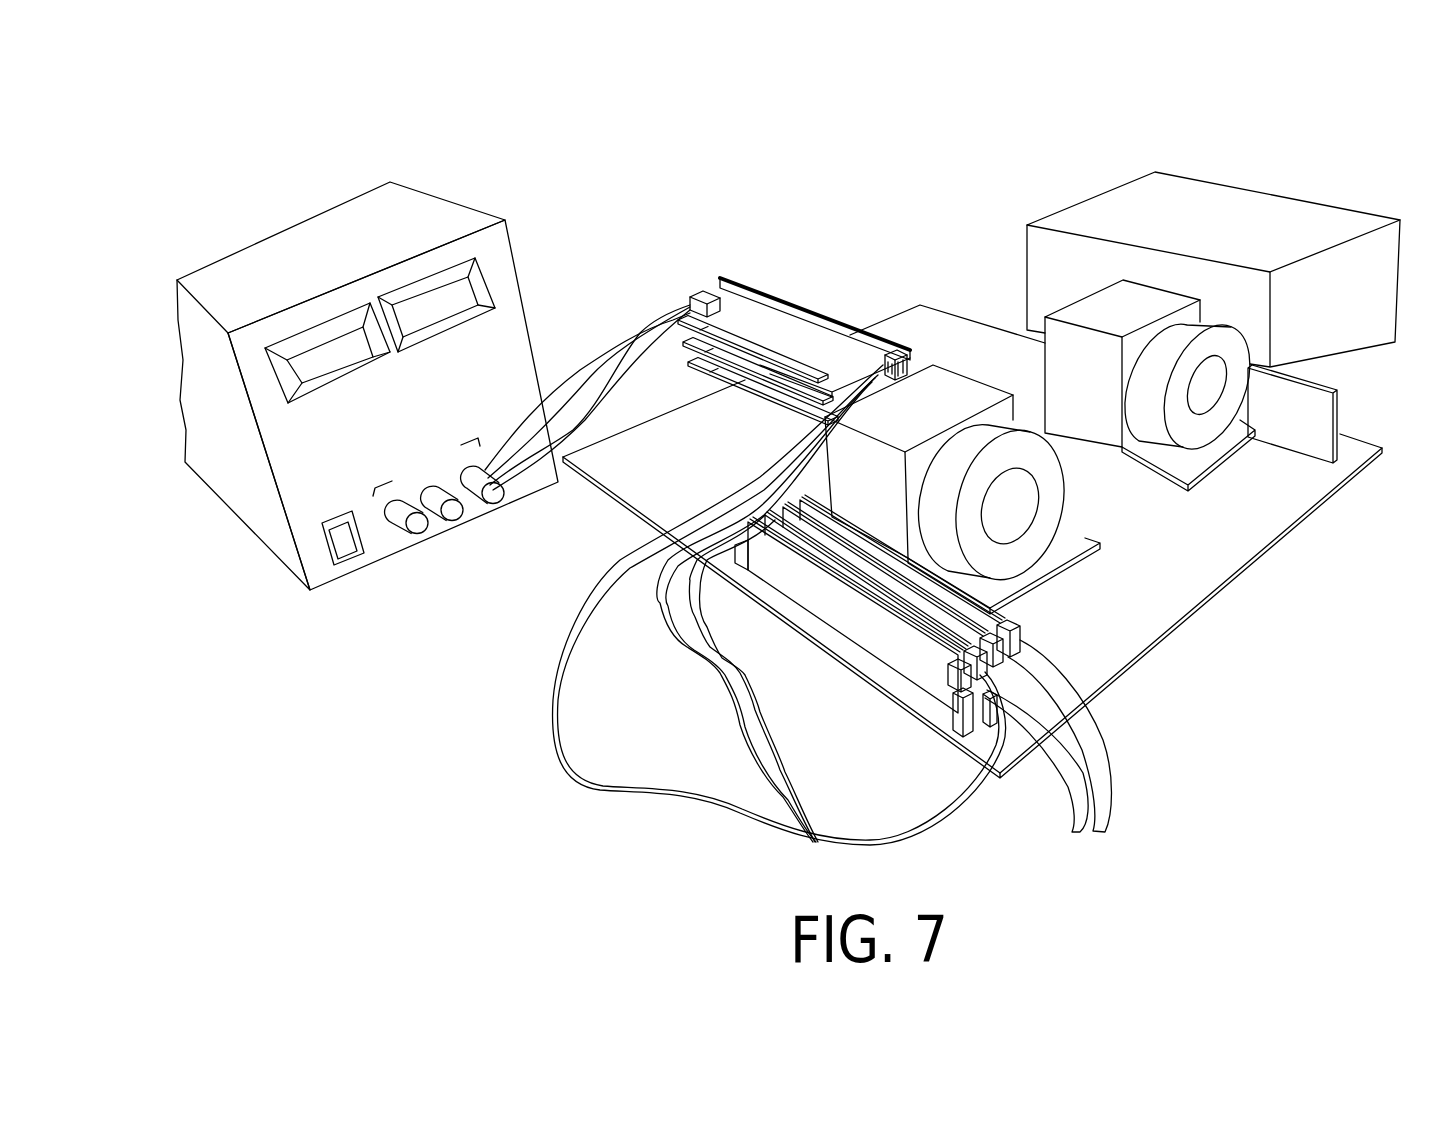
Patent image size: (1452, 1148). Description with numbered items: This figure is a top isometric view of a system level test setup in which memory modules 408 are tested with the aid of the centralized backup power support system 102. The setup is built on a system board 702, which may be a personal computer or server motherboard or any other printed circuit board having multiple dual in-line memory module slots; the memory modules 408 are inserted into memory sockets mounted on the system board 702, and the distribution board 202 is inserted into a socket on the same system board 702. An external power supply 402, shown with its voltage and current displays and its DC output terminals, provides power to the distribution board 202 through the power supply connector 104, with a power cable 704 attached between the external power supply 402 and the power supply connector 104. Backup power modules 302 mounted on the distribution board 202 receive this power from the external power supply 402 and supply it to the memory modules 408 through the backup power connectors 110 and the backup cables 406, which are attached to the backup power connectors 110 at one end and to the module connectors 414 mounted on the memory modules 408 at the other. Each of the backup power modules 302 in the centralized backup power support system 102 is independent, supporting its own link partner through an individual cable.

The centralized backup power support system 102 is at (708, 152).
The power supply connector 104 is at (690, 300).
The backup power connectors 110 is at (907, 343).
The distribution board 202 is at (717, 297).
The backup power modules 302 is at (803, 320).
The external power supply 402 is at (228, 507).
The backup cables 406 is at (720, 712).
The memory modules 408 is at (840, 603).
The module connectors 414 is at (1030, 620).
The system board 702 is at (1167, 637).
The power cable 704 is at (618, 393).